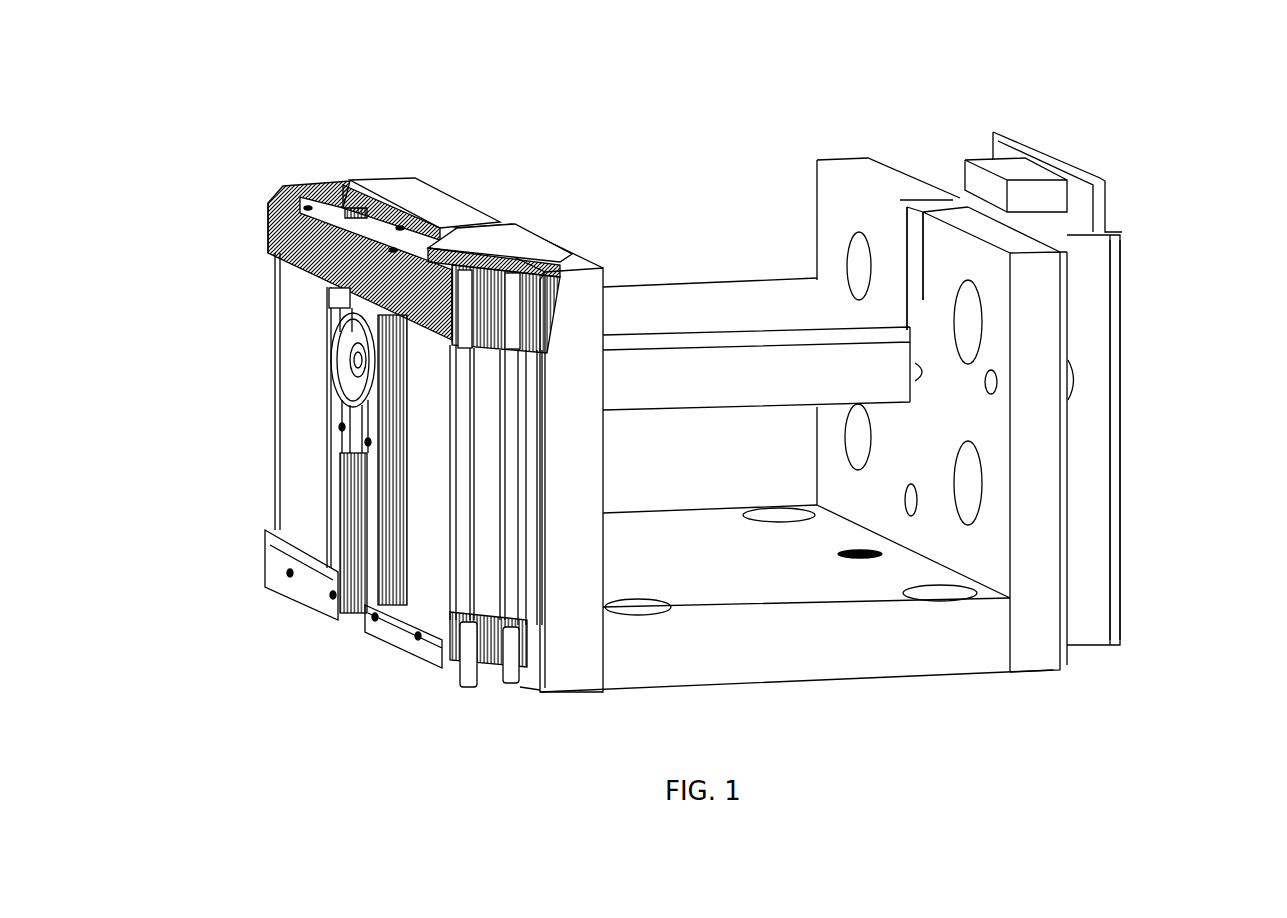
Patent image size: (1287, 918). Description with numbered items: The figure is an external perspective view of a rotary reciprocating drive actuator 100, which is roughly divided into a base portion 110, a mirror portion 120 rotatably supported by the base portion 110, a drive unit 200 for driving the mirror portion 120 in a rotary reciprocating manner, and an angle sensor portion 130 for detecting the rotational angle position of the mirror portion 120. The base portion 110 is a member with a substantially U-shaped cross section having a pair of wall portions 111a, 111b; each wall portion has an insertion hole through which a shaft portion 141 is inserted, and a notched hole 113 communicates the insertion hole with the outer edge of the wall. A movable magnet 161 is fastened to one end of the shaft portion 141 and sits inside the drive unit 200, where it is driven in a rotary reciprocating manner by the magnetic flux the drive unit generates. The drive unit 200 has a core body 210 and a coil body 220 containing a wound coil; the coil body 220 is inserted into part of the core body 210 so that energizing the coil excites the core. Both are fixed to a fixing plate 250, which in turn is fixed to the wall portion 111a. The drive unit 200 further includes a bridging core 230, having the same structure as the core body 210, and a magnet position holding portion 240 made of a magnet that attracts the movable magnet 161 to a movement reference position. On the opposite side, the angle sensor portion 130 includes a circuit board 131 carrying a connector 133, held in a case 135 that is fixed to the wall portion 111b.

The rotary reciprocating drive actuator 100 is at (1060, 43).
The base portion 110 is at (770, 650).
The wall portion 111a is at (570, 588).
The wall portion 111b is at (1032, 573).
The notched hole 113 is at (915, 215).
The mirror portion 120 is at (700, 310).
The angle sensor portion 130 is at (1096, 393).
The circuit board 131 is at (1090, 165).
The connector 133 is at (1030, 170).
The case 135 is at (1114, 453).
The shaft portion 141 is at (330, 358).
The movable magnet 161 is at (340, 398).
The drive unit 200 is at (338, 671).
The core body 210 is at (312, 585).
The coil body 220 is at (293, 370).
The bridging core 230 is at (298, 203).
The magnet position holding portion 240 is at (330, 303).
The fixing plate 250 is at (530, 673).